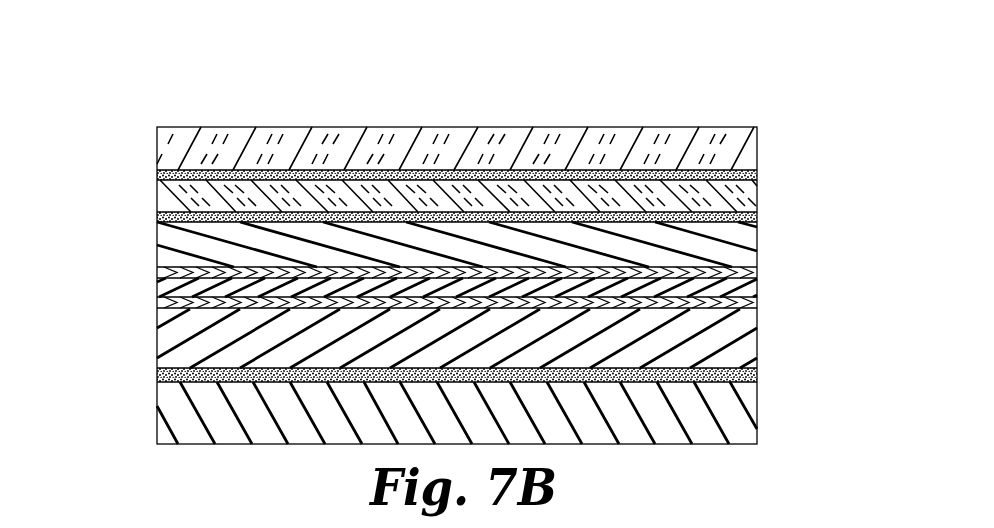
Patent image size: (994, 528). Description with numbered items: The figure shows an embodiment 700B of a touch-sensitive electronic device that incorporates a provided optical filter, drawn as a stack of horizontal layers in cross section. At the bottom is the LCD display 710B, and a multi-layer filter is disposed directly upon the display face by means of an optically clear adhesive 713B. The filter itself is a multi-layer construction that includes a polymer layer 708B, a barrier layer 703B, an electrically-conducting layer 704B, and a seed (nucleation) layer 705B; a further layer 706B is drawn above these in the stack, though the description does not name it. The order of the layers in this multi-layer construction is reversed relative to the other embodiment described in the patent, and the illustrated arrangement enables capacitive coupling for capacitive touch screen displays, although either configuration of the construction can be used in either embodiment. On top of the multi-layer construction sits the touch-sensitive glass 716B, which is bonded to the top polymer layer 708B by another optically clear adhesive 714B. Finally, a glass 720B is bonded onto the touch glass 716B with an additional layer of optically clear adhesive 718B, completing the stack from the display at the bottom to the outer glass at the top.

The touch-sensitive electronic device 700B is at (745, 77).
The glass 720B is at (747, 145).
The optically clear adhesive 718B is at (157, 175).
The touch-sensitive glass 716B is at (748, 200).
The optically clear adhesive 714B is at (157, 217).
The layer 706B is at (157, 238).
The seed (nucleation) layer 705B is at (157, 274).
The electrically-conducting layer 704B is at (157, 291).
The barrier layer 703B is at (157, 303).
The polymer layer 708B is at (748, 337).
The optically clear adhesive 713B is at (748, 376).
The LCD display 710B is at (745, 428).